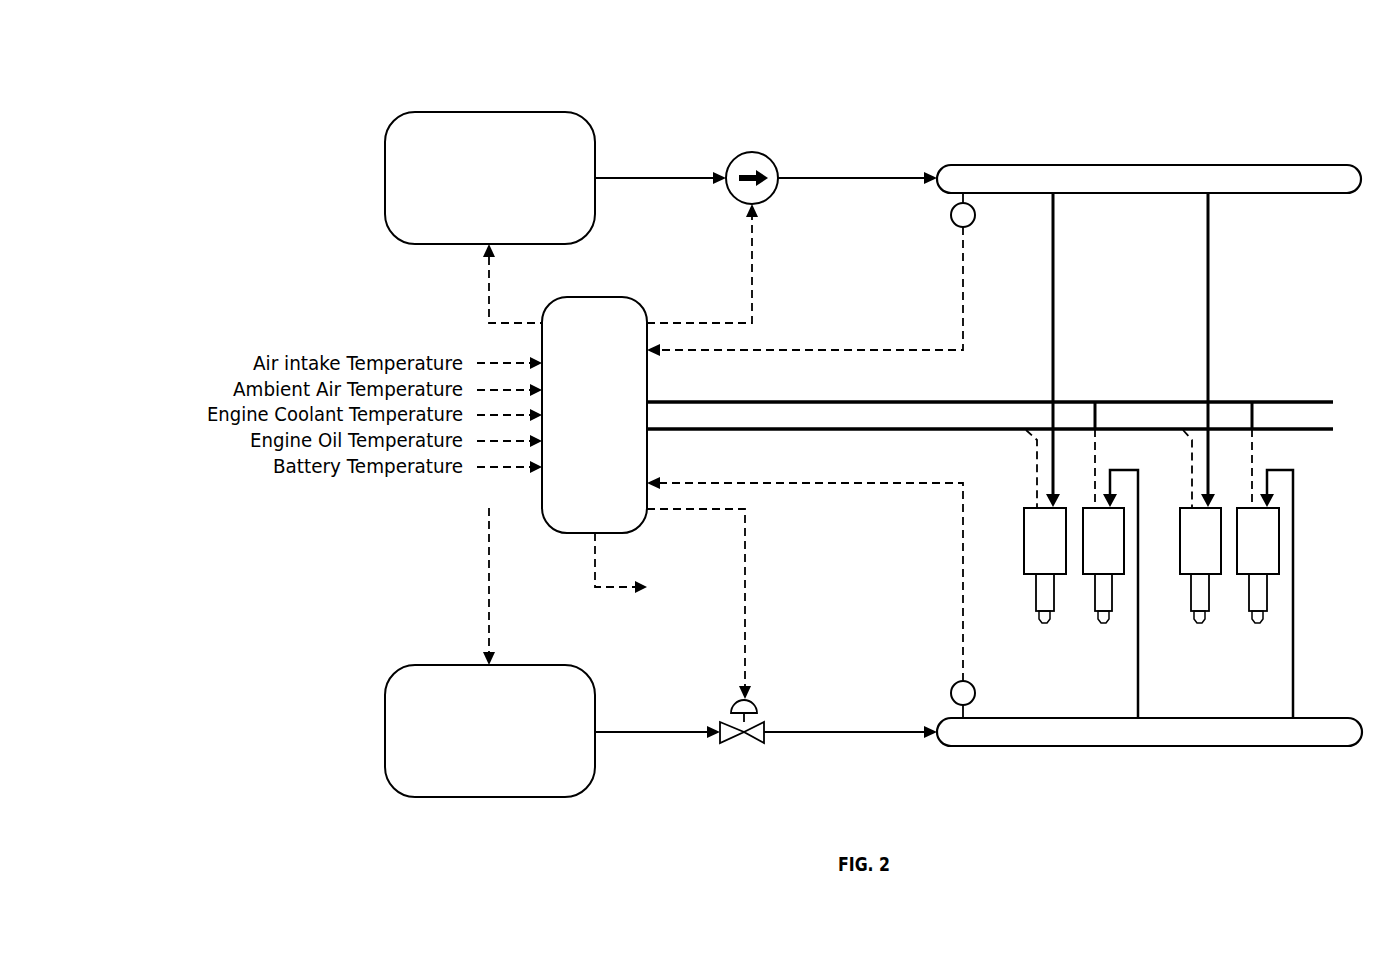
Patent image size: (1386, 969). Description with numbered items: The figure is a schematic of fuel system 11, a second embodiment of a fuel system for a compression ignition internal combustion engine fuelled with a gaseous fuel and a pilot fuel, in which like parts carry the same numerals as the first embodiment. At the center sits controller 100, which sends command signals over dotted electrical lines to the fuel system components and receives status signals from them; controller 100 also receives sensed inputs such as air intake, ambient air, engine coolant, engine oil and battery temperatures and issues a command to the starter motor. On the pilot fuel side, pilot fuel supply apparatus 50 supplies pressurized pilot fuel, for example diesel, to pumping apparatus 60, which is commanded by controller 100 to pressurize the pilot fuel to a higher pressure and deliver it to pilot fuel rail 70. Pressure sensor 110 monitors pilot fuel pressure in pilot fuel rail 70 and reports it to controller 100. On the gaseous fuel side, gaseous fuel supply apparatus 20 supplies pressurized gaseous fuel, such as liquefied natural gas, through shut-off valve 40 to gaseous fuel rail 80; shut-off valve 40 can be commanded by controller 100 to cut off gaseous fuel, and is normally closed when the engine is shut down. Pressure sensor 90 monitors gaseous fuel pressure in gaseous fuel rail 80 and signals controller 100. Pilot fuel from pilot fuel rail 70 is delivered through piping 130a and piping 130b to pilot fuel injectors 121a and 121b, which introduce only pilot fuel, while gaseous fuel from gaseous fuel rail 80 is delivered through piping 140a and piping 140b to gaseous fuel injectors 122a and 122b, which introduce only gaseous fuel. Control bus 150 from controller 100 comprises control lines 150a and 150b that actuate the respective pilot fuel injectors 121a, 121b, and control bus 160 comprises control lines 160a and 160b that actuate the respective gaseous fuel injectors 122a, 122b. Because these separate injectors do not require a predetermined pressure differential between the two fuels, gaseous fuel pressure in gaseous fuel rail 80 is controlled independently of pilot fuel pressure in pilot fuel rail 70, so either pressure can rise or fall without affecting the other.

The fuel system 11 is at (1326, 102).
The gaseous fuel supply apparatus 20 is at (493, 797).
The shut-off valve 40 is at (733, 745).
The pilot fuel supply apparatus 50 is at (489, 112).
The pumping apparatus 60 is at (752, 152).
The pilot fuel rail 70 is at (1147, 165).
The gaseous fuel rail 80 is at (1150, 746).
The pressure sensor 90 is at (951, 689).
The controller 100 is at (572, 533).
The pressure sensor 110 is at (975, 214).
The pilot fuel injector 121a is at (1036, 603).
The gaseous fuel injector 122a is at (1095, 603).
The pilot fuel injector 121b is at (1191, 603).
The gaseous fuel injector 122b is at (1249, 603).
The piping 130a is at (1055, 292).
The piping 130b is at (1210, 292).
The piping 140a is at (1140, 696).
The piping 140b is at (1295, 696).
The control bus 150 is at (793, 402).
The control line 150a is at (1095, 424).
The control line 150b is at (1252, 424).
The control bus 160 is at (797, 430).
The control line 160a is at (1037, 460).
The control line 160b is at (1192, 463).